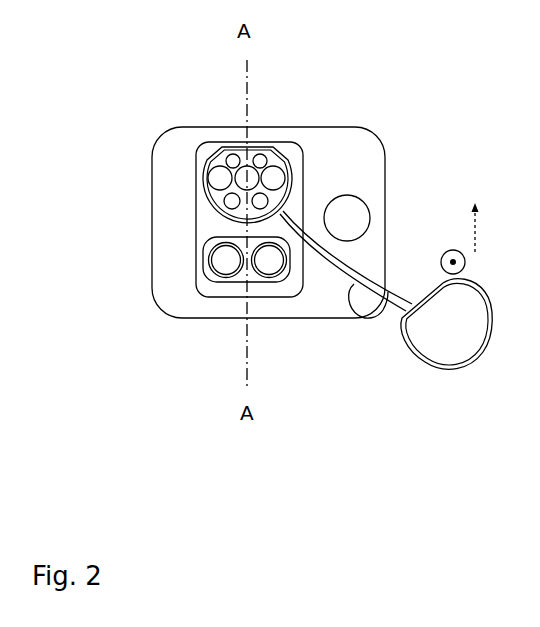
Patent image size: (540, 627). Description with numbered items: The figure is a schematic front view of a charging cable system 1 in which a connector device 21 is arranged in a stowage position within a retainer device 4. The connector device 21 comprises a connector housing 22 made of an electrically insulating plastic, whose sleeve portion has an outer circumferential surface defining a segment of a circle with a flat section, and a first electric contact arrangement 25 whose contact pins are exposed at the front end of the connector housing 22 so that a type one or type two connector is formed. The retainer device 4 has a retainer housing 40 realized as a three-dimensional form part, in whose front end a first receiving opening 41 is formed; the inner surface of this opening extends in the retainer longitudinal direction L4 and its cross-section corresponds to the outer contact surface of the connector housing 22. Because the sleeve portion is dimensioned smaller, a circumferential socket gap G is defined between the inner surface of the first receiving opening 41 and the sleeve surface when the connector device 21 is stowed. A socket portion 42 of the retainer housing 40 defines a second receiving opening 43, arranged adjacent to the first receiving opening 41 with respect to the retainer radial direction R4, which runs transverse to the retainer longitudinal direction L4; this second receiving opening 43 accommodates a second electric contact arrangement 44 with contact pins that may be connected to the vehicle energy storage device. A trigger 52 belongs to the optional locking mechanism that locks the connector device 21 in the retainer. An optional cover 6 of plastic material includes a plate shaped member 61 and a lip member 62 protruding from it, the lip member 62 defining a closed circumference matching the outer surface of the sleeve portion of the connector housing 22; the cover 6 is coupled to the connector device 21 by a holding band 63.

The charging cable system 1 is at (478, 95).
The retainer device 4 is at (364, 170).
The cover 6 is at (462, 365).
The connector device 21 is at (197, 202).
The connector housing 22 is at (303, 183).
The first electric contact arrangement 25 is at (206, 150).
The retainer housing 40 is at (291, 147).
The first receiving opening 41 is at (295, 187).
The socket portion 42 is at (194, 257).
The second receiving opening 43 is at (265, 282).
The second electric contact arrangement 44 is at (212, 289).
The trigger 52 is at (370, 218).
The plate shaped member 61 is at (422, 345).
The lip member 62 is at (485, 342).
The holding band 63 is at (362, 319).
The circumferential socket gap G is at (229, 134).
The retainer radial direction R4 is at (476, 231).
The retainer longitudinal direction L4 is at (465, 265).